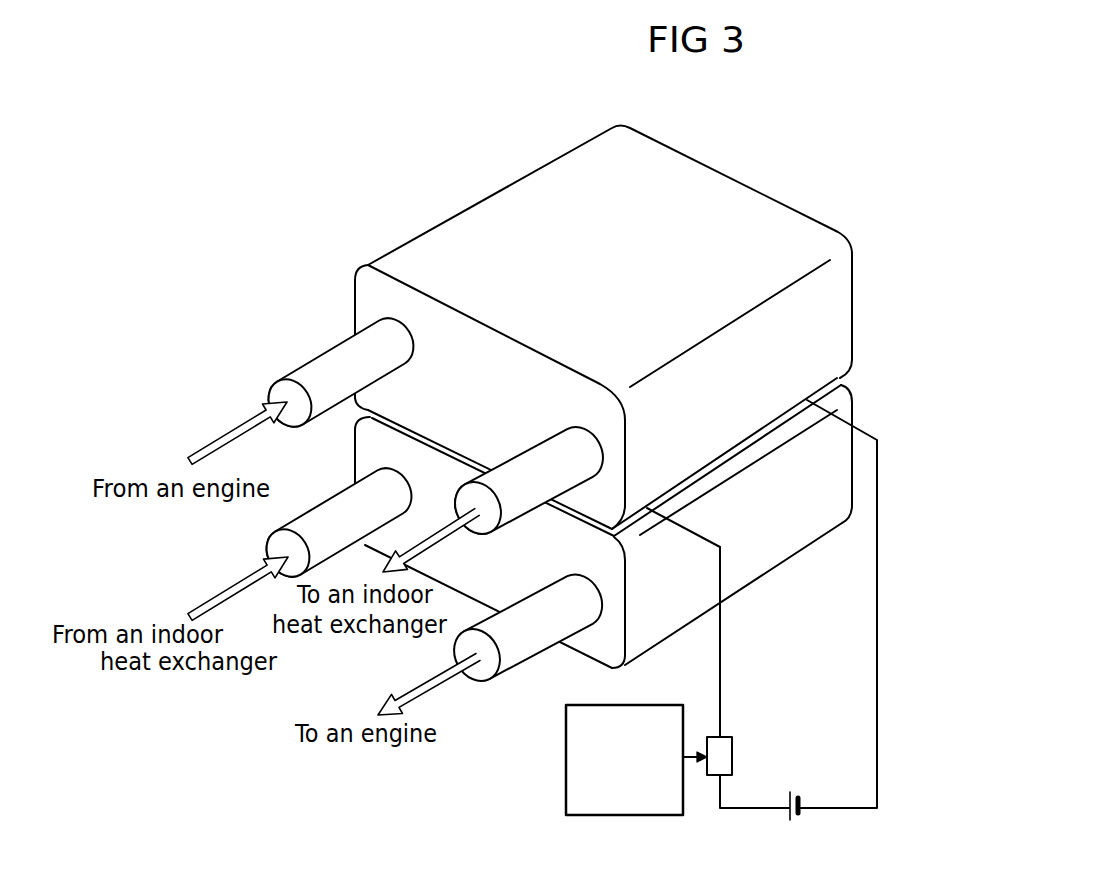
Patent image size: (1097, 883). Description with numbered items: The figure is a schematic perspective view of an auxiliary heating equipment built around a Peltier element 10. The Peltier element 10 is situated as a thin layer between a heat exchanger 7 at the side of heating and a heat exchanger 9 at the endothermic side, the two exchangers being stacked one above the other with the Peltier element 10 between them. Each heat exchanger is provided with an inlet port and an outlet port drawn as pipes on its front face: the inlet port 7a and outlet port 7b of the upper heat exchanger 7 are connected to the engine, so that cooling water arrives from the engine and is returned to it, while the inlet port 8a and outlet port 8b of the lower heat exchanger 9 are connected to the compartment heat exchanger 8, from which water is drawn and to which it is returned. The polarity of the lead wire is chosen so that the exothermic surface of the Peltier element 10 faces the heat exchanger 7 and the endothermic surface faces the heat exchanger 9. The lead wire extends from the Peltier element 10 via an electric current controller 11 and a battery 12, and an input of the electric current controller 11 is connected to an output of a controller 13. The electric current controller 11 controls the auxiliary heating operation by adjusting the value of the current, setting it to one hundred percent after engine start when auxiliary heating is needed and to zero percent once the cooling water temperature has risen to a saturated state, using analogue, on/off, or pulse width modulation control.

The heat exchanger at the side of heating 7 is at (503, 230).
The inlet port 7a is at (298, 375).
The outlet port 7b is at (538, 463).
The compartment heat exchanger 8 is at (357, 473).
The inlet port 8a is at (287, 515).
The outlet port 8b is at (516, 613).
The heat exchanger at the endothermic side 9 is at (788, 517).
The Peltier element 10 is at (370, 410).
The electric current controller 11 is at (733, 757).
The battery 12 is at (800, 790).
The controller 13 is at (565, 758).